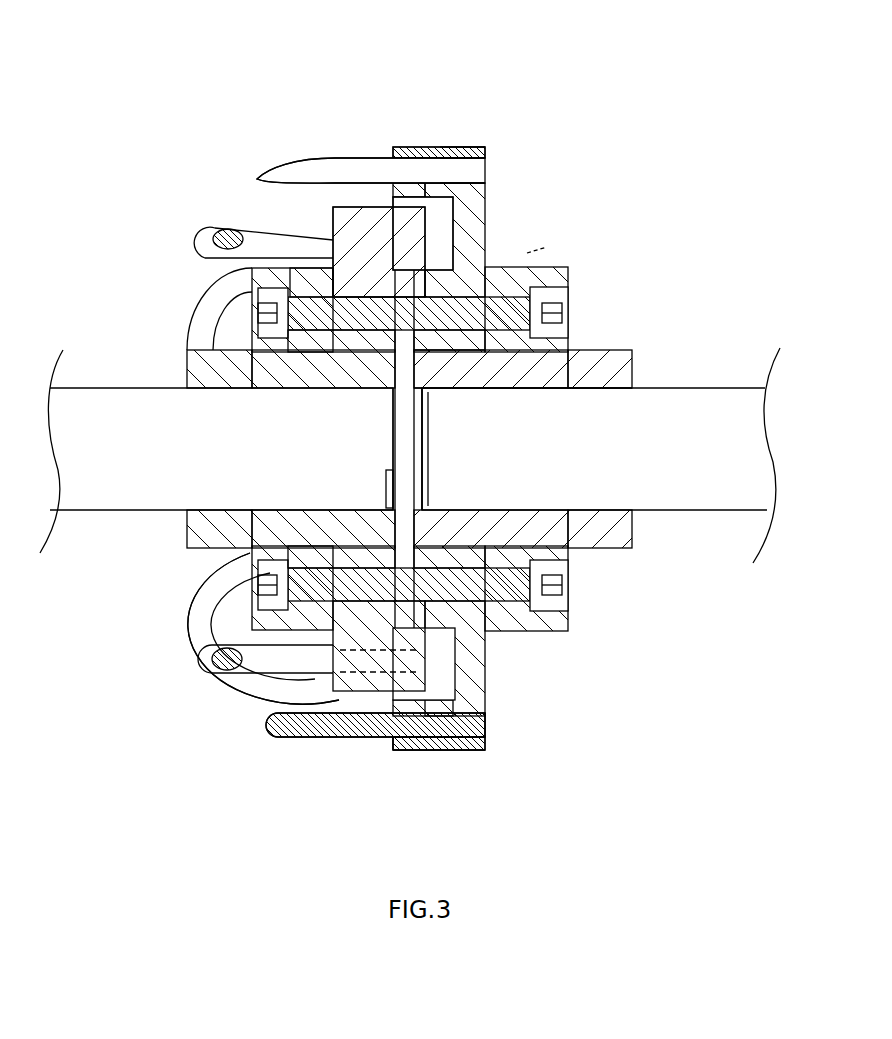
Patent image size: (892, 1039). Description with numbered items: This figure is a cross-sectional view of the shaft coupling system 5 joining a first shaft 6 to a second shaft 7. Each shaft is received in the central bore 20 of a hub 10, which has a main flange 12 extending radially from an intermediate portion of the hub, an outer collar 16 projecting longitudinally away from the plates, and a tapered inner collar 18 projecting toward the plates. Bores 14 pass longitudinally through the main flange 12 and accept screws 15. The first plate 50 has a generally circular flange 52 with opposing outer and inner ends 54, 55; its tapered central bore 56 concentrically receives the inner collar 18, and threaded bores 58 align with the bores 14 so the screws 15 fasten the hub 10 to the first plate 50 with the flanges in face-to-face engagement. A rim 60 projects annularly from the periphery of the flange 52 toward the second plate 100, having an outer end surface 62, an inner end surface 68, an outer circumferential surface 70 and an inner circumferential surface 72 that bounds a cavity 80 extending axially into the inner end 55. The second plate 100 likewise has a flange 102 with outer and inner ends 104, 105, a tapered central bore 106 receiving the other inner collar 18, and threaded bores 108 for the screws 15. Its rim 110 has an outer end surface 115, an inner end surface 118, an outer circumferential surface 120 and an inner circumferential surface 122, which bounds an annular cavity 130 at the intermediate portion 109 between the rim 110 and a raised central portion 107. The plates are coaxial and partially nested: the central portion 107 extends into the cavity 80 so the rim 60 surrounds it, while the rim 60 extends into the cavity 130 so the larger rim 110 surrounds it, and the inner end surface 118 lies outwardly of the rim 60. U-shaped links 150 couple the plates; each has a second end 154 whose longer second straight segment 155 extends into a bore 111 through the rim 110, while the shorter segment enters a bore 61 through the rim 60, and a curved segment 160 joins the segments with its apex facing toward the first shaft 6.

The coupling assembly 5 is at (338, 60).
The first shaft 6 is at (103, 461).
The second shaft 7 is at (707, 455).
The hub 10 is at (207, 583).
The main flange 12 is at (262, 228).
The bores 14 is at (632, 353).
The screws 15 is at (255, 318).
The outer collar 16 is at (600, 357).
The inner collar 18 is at (355, 370).
The central bore 20 is at (392, 427).
The first plate 50 is at (316, 203).
The flange 52 is at (370, 270).
The outer end 54 is at (256, 703).
The inner end 55 is at (512, 722).
The central bore 56 is at (340, 522).
The bores 58 is at (390, 503).
The rim 60 is at (447, 210).
The bores 61 is at (300, 720).
The outer end surface 62 is at (330, 238).
The inner end surface 68 is at (427, 230).
The outer circumferential surface 70 is at (440, 148).
The inner circumferential surface 72 is at (455, 260).
The cavity 80 is at (540, 250).
The second plate 100 is at (482, 778).
The flange 102 is at (479, 377).
The outer end 104 is at (545, 392).
The inner end 105 is at (420, 385).
The central bore 106 is at (613, 550).
The central portion 107 is at (308, 670).
The bores 108 is at (433, 620).
The intermediate portion 109 is at (455, 680).
The rim 110 is at (455, 135).
The bores 111 is at (478, 145).
The outer end surface 115 is at (490, 740).
The inner end surface 118 is at (400, 755).
The outer circumferential surface 120 is at (410, 752).
The inner circumferential surface 122 is at (371, 759).
The cavity 130 is at (360, 173).
The link 150 is at (374, 138).
The second end 154 is at (492, 178).
The second straight segment 155 is at (412, 168).
The curved segment 160 is at (197, 673).